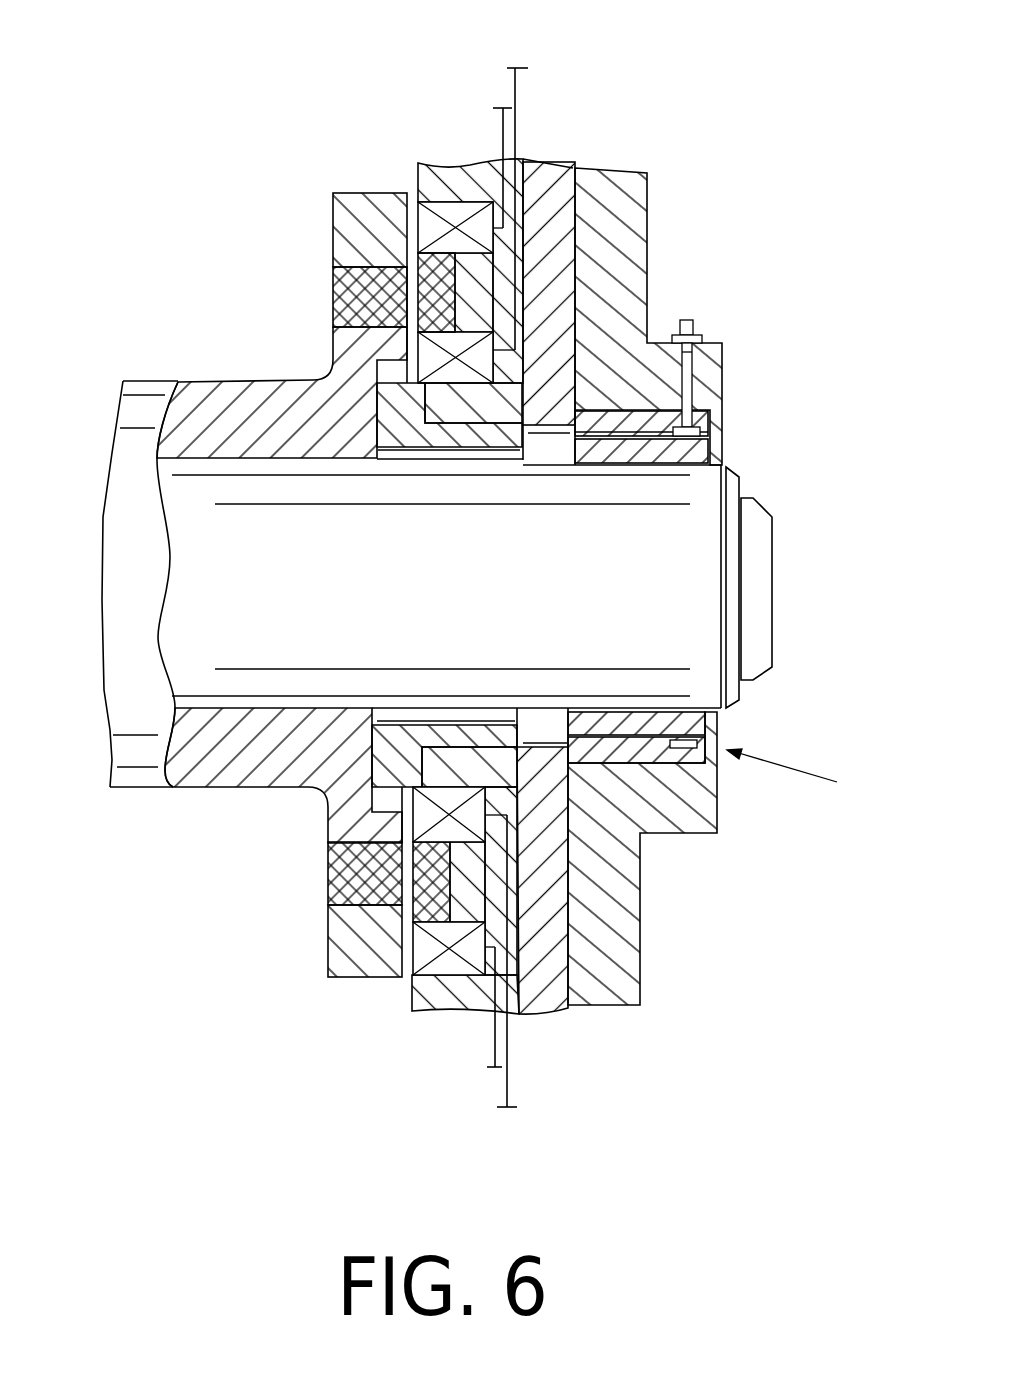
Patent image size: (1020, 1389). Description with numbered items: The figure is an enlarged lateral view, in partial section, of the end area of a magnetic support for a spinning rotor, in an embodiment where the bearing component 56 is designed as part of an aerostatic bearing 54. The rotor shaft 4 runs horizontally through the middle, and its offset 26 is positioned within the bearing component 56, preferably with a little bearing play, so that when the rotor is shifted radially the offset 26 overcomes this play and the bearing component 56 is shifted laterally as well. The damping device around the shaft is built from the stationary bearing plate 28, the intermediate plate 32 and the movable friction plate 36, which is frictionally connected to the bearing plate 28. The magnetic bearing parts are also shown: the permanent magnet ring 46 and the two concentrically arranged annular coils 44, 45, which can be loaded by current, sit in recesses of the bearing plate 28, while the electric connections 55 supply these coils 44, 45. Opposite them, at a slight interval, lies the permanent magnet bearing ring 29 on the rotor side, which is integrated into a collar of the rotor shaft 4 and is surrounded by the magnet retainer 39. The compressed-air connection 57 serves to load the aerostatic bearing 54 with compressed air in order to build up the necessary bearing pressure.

The rotor shaft 4 is at (138, 407).
The offset 26 is at (697, 643).
The bearing plate 28 is at (450, 958).
The permanent magnet bearing ring 29 is at (355, 288).
The intermediate plate 32 is at (533, 982).
The friction plate 36 is at (638, 988).
The magnet retainer 39 is at (357, 953).
The annular coil 44 is at (475, 352).
The annular coil 45 is at (440, 212).
The permanent magnet ring 46 is at (435, 302).
The aerostatic bearing 54 is at (712, 432).
The electric connections 55 is at (513, 85).
The bearing component 56 is at (800, 779).
The compressed-air connection 57 is at (700, 342).